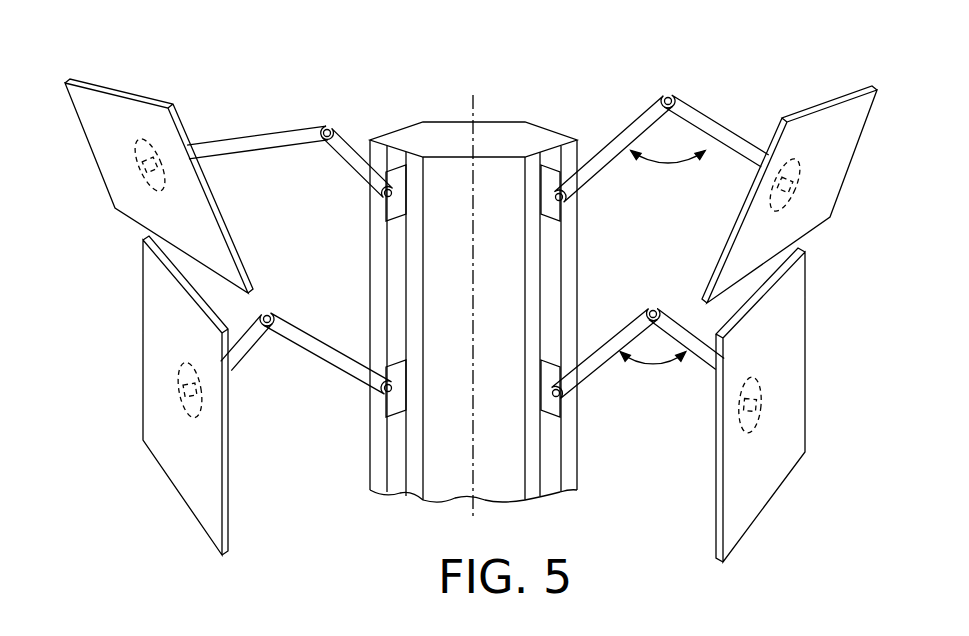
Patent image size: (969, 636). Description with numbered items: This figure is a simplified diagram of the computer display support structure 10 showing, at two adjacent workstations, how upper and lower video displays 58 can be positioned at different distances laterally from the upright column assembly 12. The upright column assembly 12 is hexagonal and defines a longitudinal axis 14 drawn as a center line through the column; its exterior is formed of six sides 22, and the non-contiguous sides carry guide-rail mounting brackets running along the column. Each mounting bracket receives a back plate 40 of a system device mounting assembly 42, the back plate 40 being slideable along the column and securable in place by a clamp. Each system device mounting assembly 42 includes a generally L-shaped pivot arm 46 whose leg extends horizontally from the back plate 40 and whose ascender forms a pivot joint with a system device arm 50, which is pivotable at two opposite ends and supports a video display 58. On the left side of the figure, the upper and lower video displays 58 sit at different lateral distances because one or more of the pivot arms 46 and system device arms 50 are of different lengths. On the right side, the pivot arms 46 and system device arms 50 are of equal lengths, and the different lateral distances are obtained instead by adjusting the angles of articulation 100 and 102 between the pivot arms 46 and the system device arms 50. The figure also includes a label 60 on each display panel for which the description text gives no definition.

The computer display support structure 10 is at (300, 527).
The upright column assembly 12 is at (512, 290).
The longitudinal axis 14 is at (469, 100).
The sides 22 is at (398, 150).
The back plate 40 is at (384, 213).
The system device mounting assembly 42 is at (325, 124).
The pivot arm 46 is at (600, 395).
The system device arm 50 is at (222, 141).
The video display 58 is at (84, 88).
The sign panel 60 is at (88, 140).
The angle of articulation 100 is at (674, 166).
The angle of articulation 102 is at (665, 368).